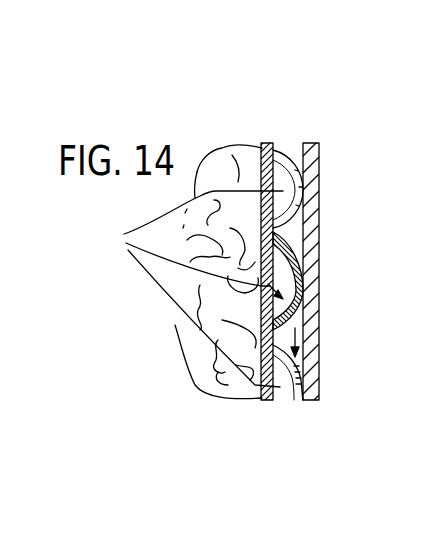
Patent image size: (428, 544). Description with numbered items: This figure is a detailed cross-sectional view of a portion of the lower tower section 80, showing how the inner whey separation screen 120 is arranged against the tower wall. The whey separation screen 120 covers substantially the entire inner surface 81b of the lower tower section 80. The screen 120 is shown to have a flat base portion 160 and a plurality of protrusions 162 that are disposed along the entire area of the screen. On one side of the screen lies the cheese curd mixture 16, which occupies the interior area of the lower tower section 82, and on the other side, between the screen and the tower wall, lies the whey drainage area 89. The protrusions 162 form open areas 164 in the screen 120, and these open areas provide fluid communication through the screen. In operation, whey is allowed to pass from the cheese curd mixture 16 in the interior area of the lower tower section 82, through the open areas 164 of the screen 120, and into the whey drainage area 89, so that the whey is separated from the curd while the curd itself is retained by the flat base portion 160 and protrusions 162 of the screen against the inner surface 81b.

The lower tower section 80 is at (318, 262).
The cheese curd mixture 16 is at (219, 155).
The flat base portion 160 is at (265, 145).
The inner surface 81b is at (298, 146).
The interior area of the lower tower section 82 is at (253, 217).
The whey drainage area 89 is at (298, 222).
The protrusions 162 is at (303, 247).
The open areas 164 is at (186, 289).
The inner whey separation screen 120 is at (280, 410).